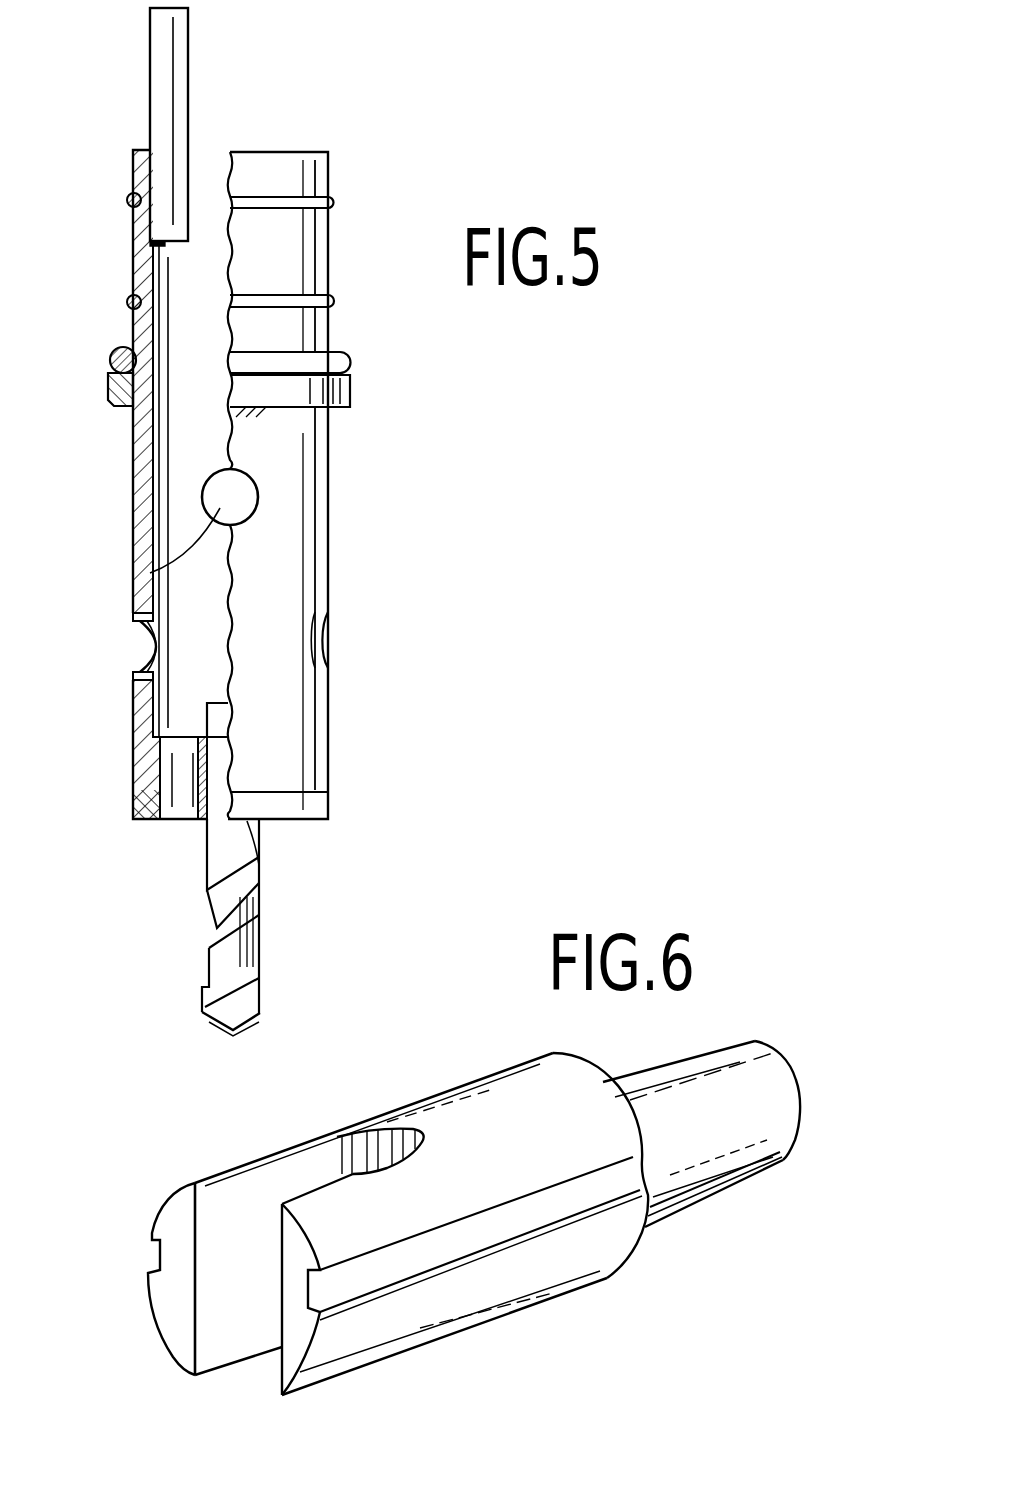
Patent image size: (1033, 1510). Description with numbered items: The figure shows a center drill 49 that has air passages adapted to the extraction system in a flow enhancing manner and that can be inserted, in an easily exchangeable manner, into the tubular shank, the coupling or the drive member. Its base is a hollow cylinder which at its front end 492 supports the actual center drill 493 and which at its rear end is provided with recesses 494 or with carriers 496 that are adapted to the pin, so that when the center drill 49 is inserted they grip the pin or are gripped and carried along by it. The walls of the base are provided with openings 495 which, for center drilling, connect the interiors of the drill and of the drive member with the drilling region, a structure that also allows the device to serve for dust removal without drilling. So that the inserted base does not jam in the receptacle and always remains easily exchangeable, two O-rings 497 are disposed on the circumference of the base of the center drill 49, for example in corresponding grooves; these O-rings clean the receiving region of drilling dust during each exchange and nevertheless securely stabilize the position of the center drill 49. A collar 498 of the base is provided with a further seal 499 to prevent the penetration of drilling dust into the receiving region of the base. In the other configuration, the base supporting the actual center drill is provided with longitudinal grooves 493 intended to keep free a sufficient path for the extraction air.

In FIG. 5, the center drill 49 is at (88, 532).
In FIG. 6, the center drill 49 is at (482, 1303).
In FIG. 5, the front end 492 is at (290, 808).
In FIG. 5, the center drill 493 is at (220, 953).
In FIG. 6, the center drill 493 is at (748, 1190).
In FIG. 6, the recesses 494 is at (357, 1158).
In FIG. 5, the openings 495 is at (130, 598).
In FIG. 6, the openings 495 is at (153, 1258).
In FIG. 5, the carriers 496 is at (160, 55).
In FIG. 5, the O-rings 497 is at (128, 300).
In FIG. 5, the collar 498 is at (108, 389).
In FIG. 5, the seal 499 is at (113, 352).